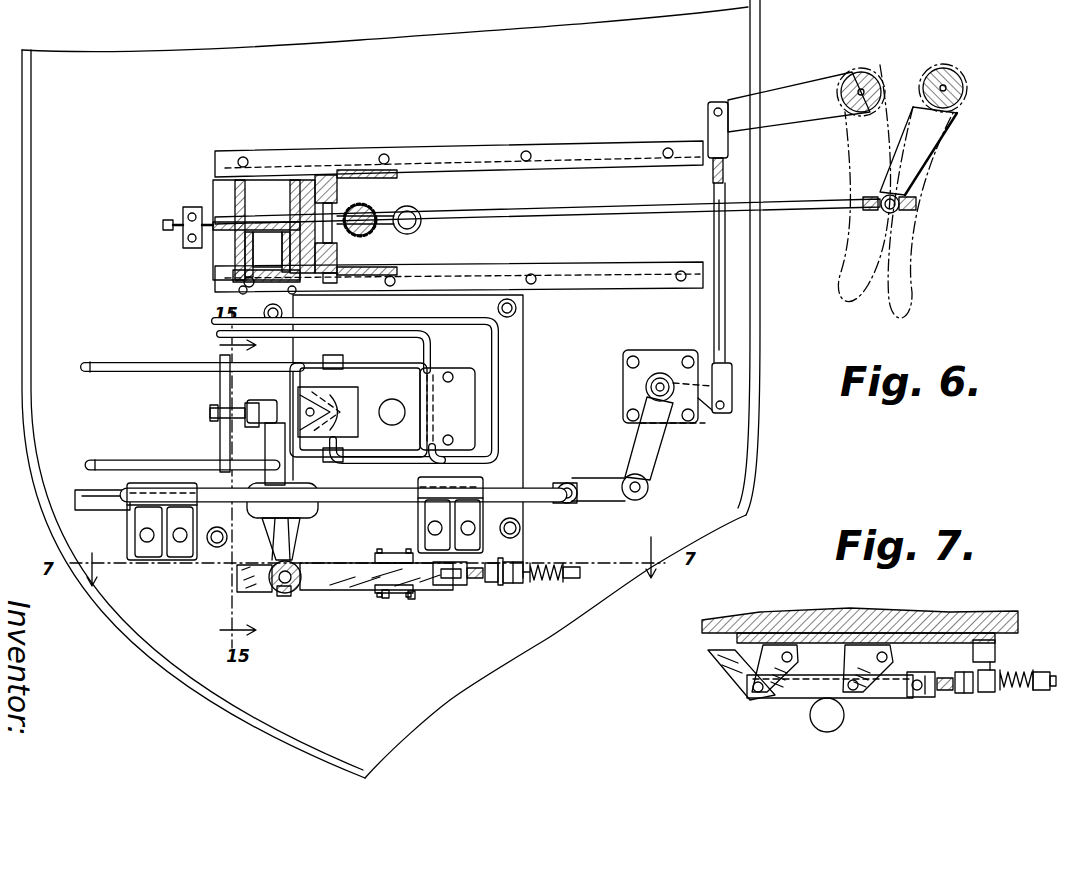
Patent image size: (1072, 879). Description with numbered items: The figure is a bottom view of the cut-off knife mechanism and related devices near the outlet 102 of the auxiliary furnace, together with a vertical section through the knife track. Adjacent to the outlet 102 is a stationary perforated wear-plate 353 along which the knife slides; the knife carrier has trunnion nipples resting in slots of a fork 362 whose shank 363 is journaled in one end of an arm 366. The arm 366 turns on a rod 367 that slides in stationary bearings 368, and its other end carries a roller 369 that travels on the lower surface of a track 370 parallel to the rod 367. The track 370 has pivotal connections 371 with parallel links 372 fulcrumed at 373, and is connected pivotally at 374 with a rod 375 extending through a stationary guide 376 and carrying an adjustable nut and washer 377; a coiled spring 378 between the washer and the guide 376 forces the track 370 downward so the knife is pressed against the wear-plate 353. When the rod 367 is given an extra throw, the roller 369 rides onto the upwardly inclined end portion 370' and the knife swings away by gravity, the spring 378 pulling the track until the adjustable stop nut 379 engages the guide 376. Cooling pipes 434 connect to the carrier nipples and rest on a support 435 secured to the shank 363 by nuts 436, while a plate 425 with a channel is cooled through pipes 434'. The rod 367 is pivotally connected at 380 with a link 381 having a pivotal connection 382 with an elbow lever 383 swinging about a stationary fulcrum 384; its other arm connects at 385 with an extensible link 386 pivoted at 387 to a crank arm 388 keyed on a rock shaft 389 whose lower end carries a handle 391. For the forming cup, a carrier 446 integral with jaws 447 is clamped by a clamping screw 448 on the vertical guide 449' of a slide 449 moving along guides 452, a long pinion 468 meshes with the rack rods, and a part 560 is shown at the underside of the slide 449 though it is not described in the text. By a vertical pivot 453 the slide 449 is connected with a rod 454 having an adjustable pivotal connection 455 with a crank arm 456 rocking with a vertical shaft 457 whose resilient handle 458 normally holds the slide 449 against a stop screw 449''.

In FIG. 6, the slide 449 is at (232, 222).
In FIG. 6, the vertical guide 449' is at (279, 231).
In FIG. 6, the stop screw 449'' is at (174, 234).
In FIG. 6, the jaws 447 is at (305, 190).
In FIG. 6, the carrier 446 is at (328, 180).
In FIG. 6, the guides 452 is at (505, 150).
In FIG. 6, the long pinion 468 is at (368, 208).
In FIG. 6, the vertical pivot 453 is at (418, 214).
In FIG. 6, the rod 454 is at (578, 215).
In FIG. 6, the clamping screw 448 is at (335, 284).
In FIG. 6, the base plate 560 is at (232, 280).
In FIG. 6, the pivotal connection 387 is at (708, 110).
In FIG. 6, the crank arm 388 is at (799, 102).
In FIG. 6, the rock shaft 389 is at (870, 80).
In FIG. 6, the vertical shaft 457 is at (963, 85).
In FIG. 6, the crank arm 456 is at (922, 160).
In FIG. 6, the longitudinally-adjustable pivotal connection 455 is at (905, 209).
In FIG. 6, the handle 458 is at (858, 266).
In FIG. 6, the handle 391 is at (900, 294).
In FIG. 6, the extensible link 386 is at (714, 310).
In FIG. 6, the pivotal connection 385 is at (733, 405).
In FIG. 6, the stationary fulcrum 384 is at (648, 389).
In FIG. 6, the elbow lever 383 is at (655, 452).
In FIG. 6, the pivotal connection 382 is at (648, 488).
In FIG. 6, the link 381 is at (594, 505).
In FIG. 6, the pivotal connection 380 is at (571, 485).
In FIG. 6, the pipes 434 is at (192, 402).
In FIG. 6, the pipes 434' is at (355, 390).
In FIG. 6, the support 435 is at (220, 386).
In FIG. 6, the nuts 436 is at (243, 411).
In FIG. 6, the shank 363 is at (212, 416).
In FIG. 6, the wear-plate 353 is at (375, 392).
In FIG. 6, the fork 362 is at (298, 385).
In FIG. 6, the outlet 102 is at (392, 412).
In FIG. 6, the plate 425 is at (447, 409).
In FIG. 6, the arm 366 is at (268, 458).
In FIG. 6, the rod 367 is at (96, 512).
In FIG. 6, the stationary bearings 368 is at (257, 407).
In FIG. 6, the roller 369 is at (278, 595).
In FIG. 7, the roller 369 is at (826, 732).
In FIG. 6, the inclined end portion of track 370' is at (236, 578).
In FIG. 7, the inclined end portion of track 370' is at (721, 675).
In FIG. 6, the track 370 is at (376, 592).
In FIG. 7, the track 370 is at (830, 706).
In FIG. 6, the parallel links 372 is at (393, 560).
In FIG. 7, the parallel links 372 is at (768, 672).
In FIG. 6, the pivotal connections 371 is at (386, 598).
In FIG. 7, the pivotal connections 371 is at (755, 695).
In FIG. 6, the fulcrums 373 is at (412, 600).
In FIG. 7, the fulcrums 373 is at (792, 658).
In FIG. 6, the pivotal connection 374 is at (450, 586).
In FIG. 7, the pivotal connection 374 is at (918, 696).
In FIG. 6, the rod 375 is at (477, 580).
In FIG. 7, the rod 375 is at (945, 692).
In FIG. 6, the stationary guide 376 is at (512, 585).
In FIG. 7, the stationary guide 376 is at (968, 695).
In FIG. 6, the adjustable stop nut 379 is at (502, 558).
In FIG. 7, the adjustable stop nut 379 is at (985, 694).
In FIG. 6, the coiled spring 378 is at (548, 565).
In FIG. 7, the coiled spring 378 is at (1008, 670).
In FIG. 6, the adjustable nut and washer 377 is at (582, 573).
In FIG. 7, the adjustable nut and washer 377 is at (1042, 692).